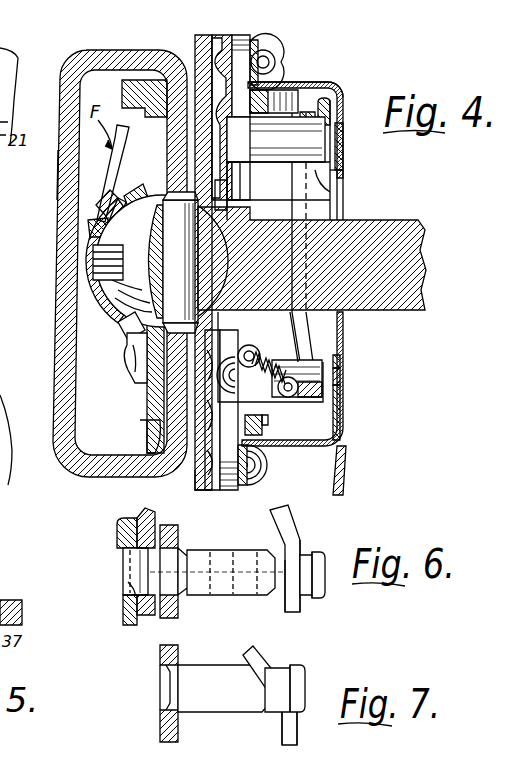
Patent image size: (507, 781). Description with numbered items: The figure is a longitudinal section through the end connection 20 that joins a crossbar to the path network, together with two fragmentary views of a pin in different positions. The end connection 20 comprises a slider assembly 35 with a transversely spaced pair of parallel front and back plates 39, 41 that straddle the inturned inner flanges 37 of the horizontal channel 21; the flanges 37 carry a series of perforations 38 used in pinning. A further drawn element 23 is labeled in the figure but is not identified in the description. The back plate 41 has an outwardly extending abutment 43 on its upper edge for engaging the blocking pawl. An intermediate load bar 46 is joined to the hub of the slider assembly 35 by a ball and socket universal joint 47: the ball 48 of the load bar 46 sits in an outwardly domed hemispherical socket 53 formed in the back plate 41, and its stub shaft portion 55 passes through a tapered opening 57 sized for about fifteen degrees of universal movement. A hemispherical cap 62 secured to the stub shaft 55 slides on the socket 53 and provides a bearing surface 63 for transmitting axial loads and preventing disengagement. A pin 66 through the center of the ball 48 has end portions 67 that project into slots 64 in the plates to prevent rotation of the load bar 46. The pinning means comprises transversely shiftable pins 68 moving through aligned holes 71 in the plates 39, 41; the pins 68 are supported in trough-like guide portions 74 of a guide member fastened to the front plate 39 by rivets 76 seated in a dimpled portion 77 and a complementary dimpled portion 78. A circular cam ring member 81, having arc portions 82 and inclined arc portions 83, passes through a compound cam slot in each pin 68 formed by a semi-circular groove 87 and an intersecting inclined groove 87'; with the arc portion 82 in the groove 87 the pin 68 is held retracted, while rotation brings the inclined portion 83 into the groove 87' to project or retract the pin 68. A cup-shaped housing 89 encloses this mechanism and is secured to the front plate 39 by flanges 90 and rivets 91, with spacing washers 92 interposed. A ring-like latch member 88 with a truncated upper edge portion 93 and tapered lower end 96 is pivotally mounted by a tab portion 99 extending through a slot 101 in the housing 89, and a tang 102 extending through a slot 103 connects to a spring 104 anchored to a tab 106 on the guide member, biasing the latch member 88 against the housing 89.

In FIG. 4, the end connection 20 is at (352, 62).
In FIG. 4, the horizontal channel 21 is at (56, 352).
In FIG. 4, the housing wall 23 is at (60, 177).
In FIG. 4, the slider assembly 35 is at (190, 483).
In FIG. 4, the inner flanges 37 is at (172, 156).
In FIG. 6, the inner flanges 37 is at (145, 616).
In FIG. 6, the perforations 38 is at (138, 545).
In FIG. 4, the front plate 39 is at (195, 44).
In FIG. 6, the front plate 39 is at (172, 526).
In FIG. 7, the front plate 39 is at (158, 720).
In FIG. 4, the back plate 41 is at (205, 405).
In FIG. 6, the back plate 41 is at (122, 613).
In FIG. 4, the abutment 43 is at (122, 92).
In FIG. 4, the load bar 46 is at (400, 228).
In FIG. 4, the ball and socket universal joint 47 is at (115, 358).
In FIG. 4, the ball 48 is at (120, 308).
In FIG. 4, the socket 53 is at (126, 329).
In FIG. 4, the pin or stub shaft portion 55 is at (178, 240).
In FIG. 4, the tapered opening 57 is at (110, 288).
In FIG. 4, the cap 62 is at (98, 210).
In FIG. 4, the bearing surface 63 is at (90, 230).
In FIG. 4, the slots 64 is at (269, 291).
In FIG. 4, the pin 66 is at (96, 266).
In FIG. 4, the end portions 67 is at (118, 204).
In FIG. 4, the pins 68 is at (323, 84).
In FIG. 6, the pins 68 is at (210, 550).
In FIG. 7, the pins 68 is at (233, 700).
In FIG. 6, the holes 71 is at (132, 588).
In FIG. 7, the holes 71 is at (175, 700).
In FIG. 4, the trough-like guide portions 74 is at (332, 195).
In FIG. 4, the rivets 76 is at (250, 160).
In FIG. 4, the dimpled portion 77 is at (148, 425).
In FIG. 4, the dimpled portion 78 is at (240, 181).
In FIG. 4, the cam ring member 81 is at (295, 339).
In FIG. 6, the cam ring member 81 is at (302, 540).
In FIG. 7, the cam ring member 81 is at (281, 729).
In FIG. 4, the arc portions 82 is at (297, 204).
In FIG. 6, the arc portions 82 is at (282, 585).
In FIG. 7, the arc portions 82 is at (300, 735).
In FIG. 4, the inclined arc portions 83 is at (302, 112).
In FIG. 6, the inclined arc portions 83 is at (280, 520).
In FIG. 7, the inclined arc portions 83 is at (262, 655).
In FIG. 6, the semi-circular groove 87 is at (328, 570).
In FIG. 7, the semi-circular groove 87 is at (299, 676).
In FIG. 6, the intersecting groove 87' is at (338, 589).
In FIG. 7, the intersecting groove 87' is at (316, 688).
In FIG. 4, the latch member 88 is at (347, 172).
In FIG. 4, the housing 89 is at (300, 448).
In FIG. 4, the flanges 90 is at (275, 52).
In FIG. 4, the rivets 91 is at (276, 62).
In FIG. 4, the spacing washers 92 is at (240, 38).
In FIG. 4, the truncated horizontal upper edge portion 93 is at (345, 122).
In FIG. 4, the tapered lower end 96 is at (343, 486).
In FIG. 4, the tab portion 99 is at (341, 92).
In FIG. 4, the slot 101 is at (345, 128).
In FIG. 4, the tang 102 is at (343, 378).
In FIG. 4, the slot 103 is at (343, 393).
In FIG. 4, the spring 104 is at (343, 364).
In FIG. 4, the tab 106 is at (266, 362).